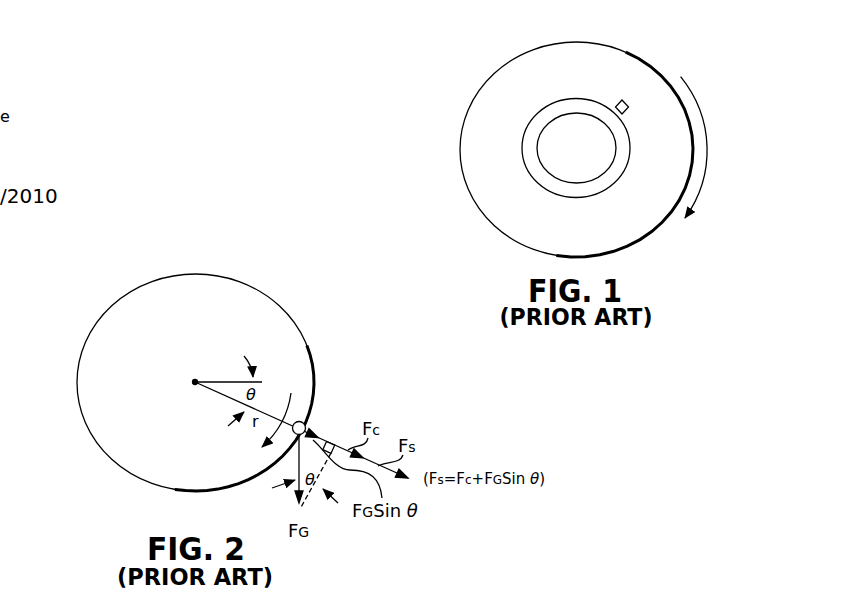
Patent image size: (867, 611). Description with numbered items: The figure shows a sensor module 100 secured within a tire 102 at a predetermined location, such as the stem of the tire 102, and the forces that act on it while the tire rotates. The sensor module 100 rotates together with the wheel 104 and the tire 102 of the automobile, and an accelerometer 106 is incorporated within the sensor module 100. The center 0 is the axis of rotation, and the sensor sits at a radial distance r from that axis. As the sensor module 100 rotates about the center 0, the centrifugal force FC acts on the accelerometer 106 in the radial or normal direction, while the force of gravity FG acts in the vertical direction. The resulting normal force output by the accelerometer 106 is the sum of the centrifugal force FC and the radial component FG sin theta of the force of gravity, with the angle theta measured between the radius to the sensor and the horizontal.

In FIG. 1, the sensor module 100 is at (673, 62).
In FIG. 1, the tire 102 is at (465, 151).
In FIG. 1, the wheel 104 is at (556, 118).
In FIG. 1, the accelerometer 106 is at (623, 101).
In FIG. 2, the accelerometer 106 is at (306, 424).
In FIG. 2, the center 0 is at (193, 380).